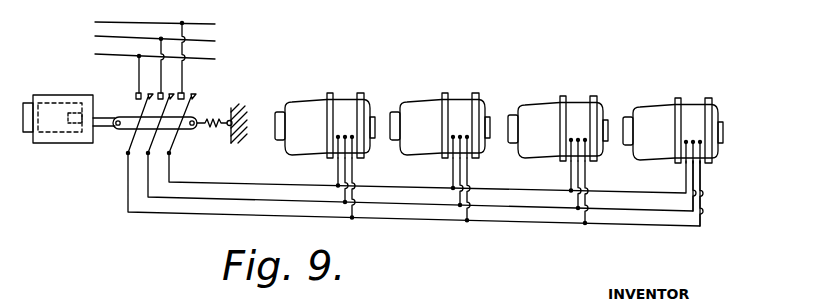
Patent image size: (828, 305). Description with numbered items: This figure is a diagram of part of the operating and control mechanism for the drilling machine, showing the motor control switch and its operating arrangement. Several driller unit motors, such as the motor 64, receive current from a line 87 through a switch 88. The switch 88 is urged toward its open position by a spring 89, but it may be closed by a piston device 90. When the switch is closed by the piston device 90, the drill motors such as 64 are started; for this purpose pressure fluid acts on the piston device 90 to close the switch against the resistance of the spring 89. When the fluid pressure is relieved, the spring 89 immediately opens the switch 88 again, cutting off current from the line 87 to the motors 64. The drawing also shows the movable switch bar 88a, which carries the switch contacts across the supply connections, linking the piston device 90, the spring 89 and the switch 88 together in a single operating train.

The driller unit motor 64 is at (458, 112).
The line 87 is at (216, 47).
The switch 88 is at (191, 88).
The switch bar 88a is at (126, 129).
The spring 89 is at (213, 128).
The piston device 90 is at (47, 94).